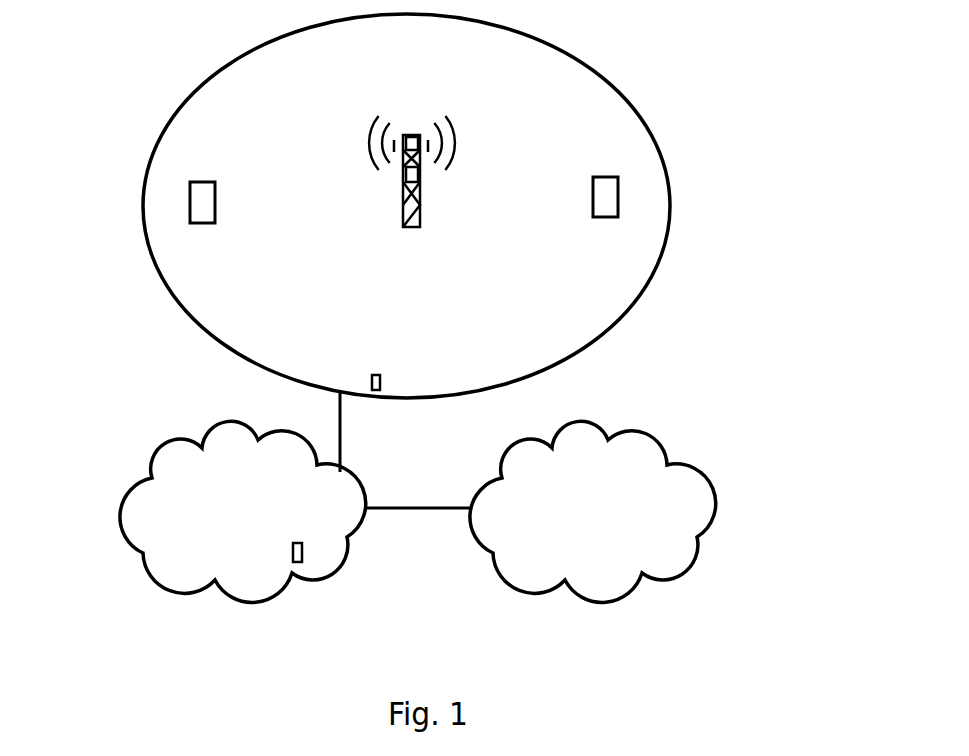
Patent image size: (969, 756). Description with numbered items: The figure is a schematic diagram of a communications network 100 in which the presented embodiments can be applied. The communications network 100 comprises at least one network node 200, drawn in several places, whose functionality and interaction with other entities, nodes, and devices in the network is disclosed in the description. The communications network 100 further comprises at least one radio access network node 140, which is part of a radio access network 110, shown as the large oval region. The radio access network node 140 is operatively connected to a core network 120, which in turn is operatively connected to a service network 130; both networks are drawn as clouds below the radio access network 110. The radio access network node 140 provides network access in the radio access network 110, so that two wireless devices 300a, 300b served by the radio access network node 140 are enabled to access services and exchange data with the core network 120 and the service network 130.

The communications network 100 is at (721, 132).
The radio access network 110 is at (192, 323).
The core network 120 is at (166, 479).
The service network 130 is at (563, 476).
The radio access network node 140 is at (424, 210).
The network node 200 is at (403, 184).
The wireless device 300a is at (200, 223).
The wireless device 300b is at (607, 217).